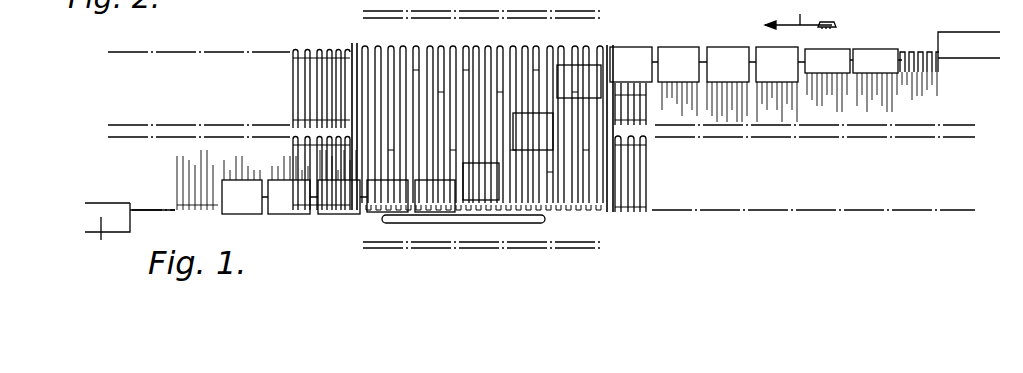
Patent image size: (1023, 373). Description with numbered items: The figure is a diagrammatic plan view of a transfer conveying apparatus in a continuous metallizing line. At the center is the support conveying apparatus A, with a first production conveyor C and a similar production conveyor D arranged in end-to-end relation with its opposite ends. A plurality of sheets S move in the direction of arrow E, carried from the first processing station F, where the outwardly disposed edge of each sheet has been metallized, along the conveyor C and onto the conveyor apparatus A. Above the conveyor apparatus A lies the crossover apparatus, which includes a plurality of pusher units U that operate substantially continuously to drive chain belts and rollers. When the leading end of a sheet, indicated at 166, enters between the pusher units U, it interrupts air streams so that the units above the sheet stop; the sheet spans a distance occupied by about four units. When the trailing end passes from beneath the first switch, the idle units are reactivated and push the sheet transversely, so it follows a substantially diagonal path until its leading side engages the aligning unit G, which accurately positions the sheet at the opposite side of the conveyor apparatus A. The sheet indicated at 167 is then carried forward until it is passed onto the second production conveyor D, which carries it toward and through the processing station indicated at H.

The production conveyor D is at (316, 43).
The pusher units U is at (404, 46).
The sheet 166 is at (622, 65).
The sheet 167 is at (432, 210).
The sheets S is at (725, 60).
The arrow indicating direction of movement E is at (800, 14).
The first production conveyor C is at (916, 44).
The first processing station F is at (968, 43).
The processing station H is at (130, 234).
The aligning unit G is at (526, 218).
The support conveying apparatus A is at (608, 211).